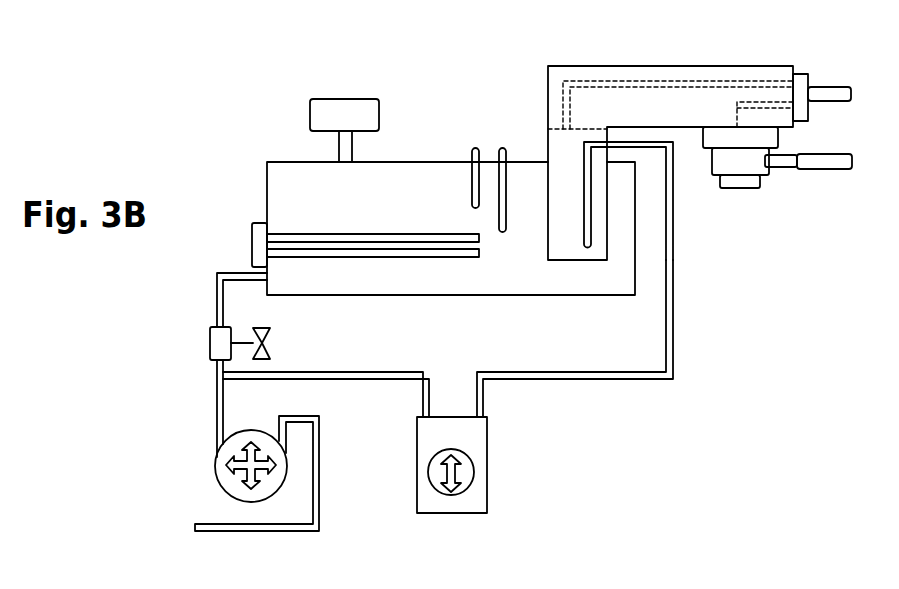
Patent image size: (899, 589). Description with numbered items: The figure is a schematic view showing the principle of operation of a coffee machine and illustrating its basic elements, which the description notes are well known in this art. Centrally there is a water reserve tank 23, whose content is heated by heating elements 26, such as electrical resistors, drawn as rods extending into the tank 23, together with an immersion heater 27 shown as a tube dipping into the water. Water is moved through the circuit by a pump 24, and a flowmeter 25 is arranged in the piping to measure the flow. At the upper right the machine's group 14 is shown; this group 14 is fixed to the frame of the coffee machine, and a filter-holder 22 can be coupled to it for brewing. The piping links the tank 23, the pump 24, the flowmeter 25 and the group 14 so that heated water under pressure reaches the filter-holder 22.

The group 14 is at (780, 140).
The filter-holder 22 is at (822, 170).
The water reserve tank 23 is at (303, 183).
The pump 24 is at (215, 487).
The flowmeter 25 is at (487, 445).
The heating elements 26 is at (298, 233).
The immersion heater 27 is at (598, 209).